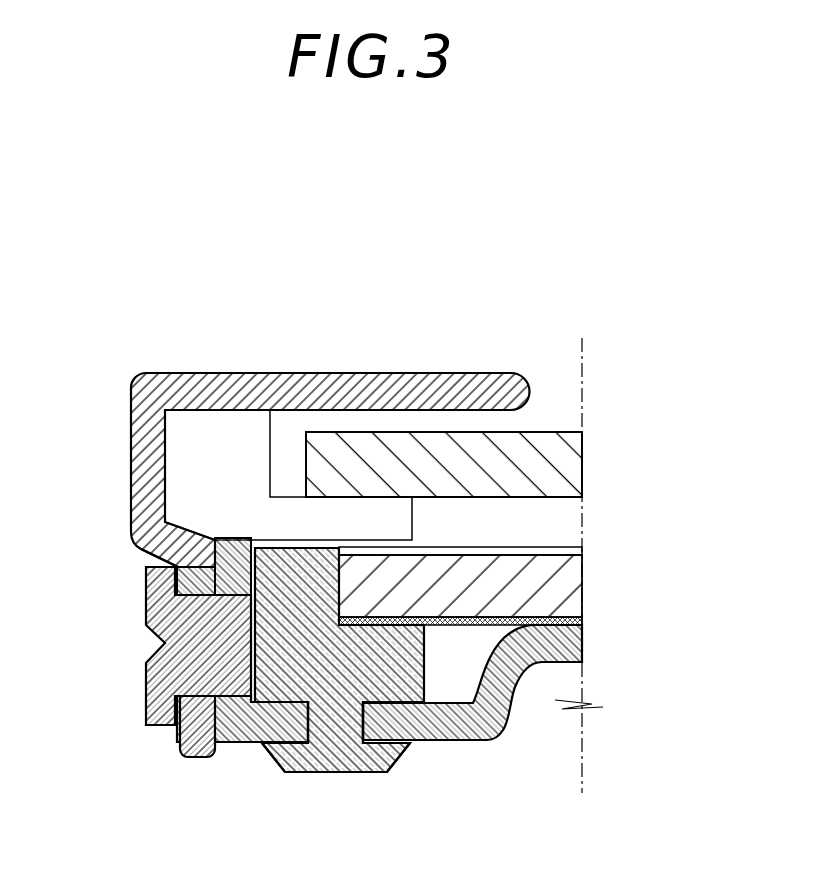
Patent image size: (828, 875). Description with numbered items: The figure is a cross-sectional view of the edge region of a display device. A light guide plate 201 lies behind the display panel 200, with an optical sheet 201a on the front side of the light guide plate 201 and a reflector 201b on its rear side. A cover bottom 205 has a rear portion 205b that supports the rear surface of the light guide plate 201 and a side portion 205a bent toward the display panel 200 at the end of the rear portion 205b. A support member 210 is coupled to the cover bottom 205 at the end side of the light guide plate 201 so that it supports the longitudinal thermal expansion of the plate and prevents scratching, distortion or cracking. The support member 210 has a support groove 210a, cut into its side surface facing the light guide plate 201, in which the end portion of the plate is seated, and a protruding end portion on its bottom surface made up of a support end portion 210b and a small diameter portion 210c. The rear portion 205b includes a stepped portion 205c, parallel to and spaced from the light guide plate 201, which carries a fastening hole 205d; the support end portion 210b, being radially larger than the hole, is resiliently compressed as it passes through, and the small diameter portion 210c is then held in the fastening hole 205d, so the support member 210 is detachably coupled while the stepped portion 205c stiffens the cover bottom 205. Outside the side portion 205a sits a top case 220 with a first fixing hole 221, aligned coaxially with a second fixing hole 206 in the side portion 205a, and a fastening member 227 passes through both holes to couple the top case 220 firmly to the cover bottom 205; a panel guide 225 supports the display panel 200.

The display panel 200 is at (577, 463).
The light guide plate 201 is at (577, 585).
The optical sheet 201a is at (577, 557).
The reflector 201b is at (582, 621).
The cover bottom 205 is at (517, 747).
The side portion 205a is at (233, 550).
The rear portion 205b is at (582, 660).
The stepped portion 205c is at (438, 720).
The fastening hole 205d is at (297, 712).
The second fixing hole 206 is at (196, 590).
The support member 210 is at (273, 660).
The support groove 210a is at (386, 630).
The support end portion 210b is at (343, 757).
The small diameter portion 210c is at (337, 745).
The top case 220 is at (188, 382).
The first fixing hole 221 is at (177, 568).
The panel guide 225 is at (212, 420).
The fastening member 227 is at (163, 673).